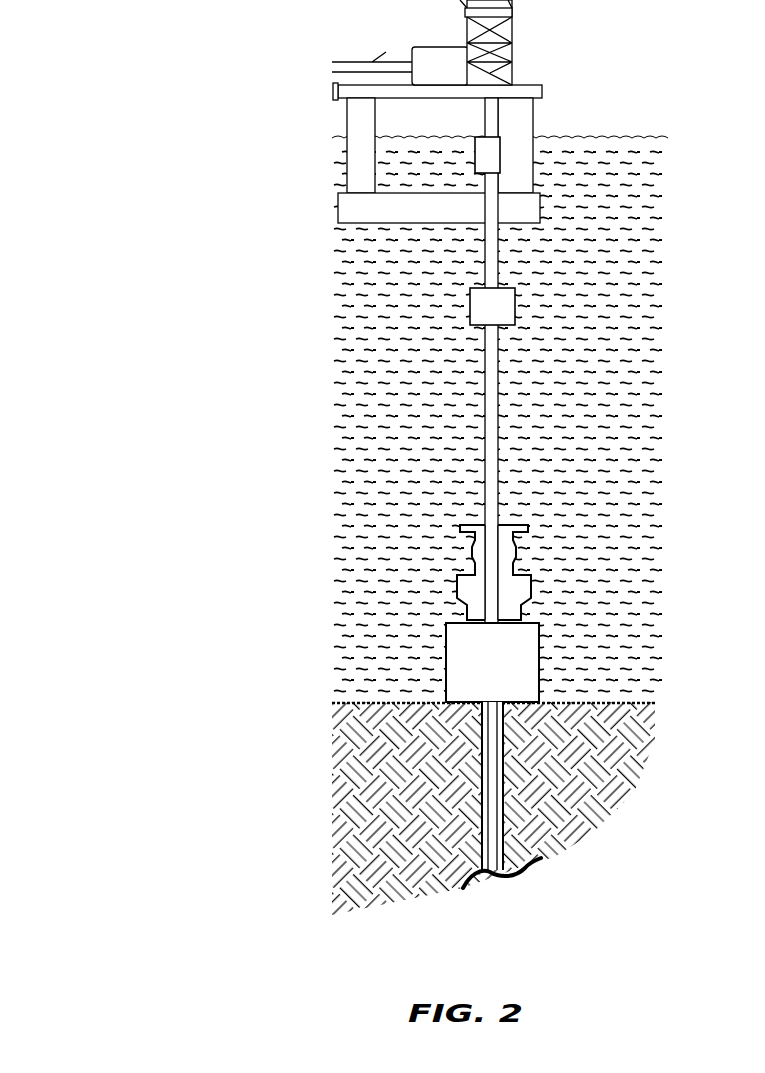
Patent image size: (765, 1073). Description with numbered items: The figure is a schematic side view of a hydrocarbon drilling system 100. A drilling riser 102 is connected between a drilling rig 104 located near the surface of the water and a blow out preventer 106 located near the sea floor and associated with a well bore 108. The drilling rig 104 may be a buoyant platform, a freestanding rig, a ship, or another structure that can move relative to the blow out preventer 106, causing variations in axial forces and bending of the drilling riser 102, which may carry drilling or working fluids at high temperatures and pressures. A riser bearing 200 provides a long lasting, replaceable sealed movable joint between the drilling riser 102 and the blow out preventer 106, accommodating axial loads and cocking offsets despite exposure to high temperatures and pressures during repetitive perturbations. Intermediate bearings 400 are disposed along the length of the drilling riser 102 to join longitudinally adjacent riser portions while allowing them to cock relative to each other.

The hydrocarbon drilling system 100 is at (212, 144).
The drilling riser 102 is at (495, 390).
The drilling rig 104 is at (531, 178).
The blow out preventer 106 is at (538, 662).
The well bore 108 is at (520, 760).
The riser bearing 200 is at (448, 558).
The intermediate bearings 400 is at (464, 168).